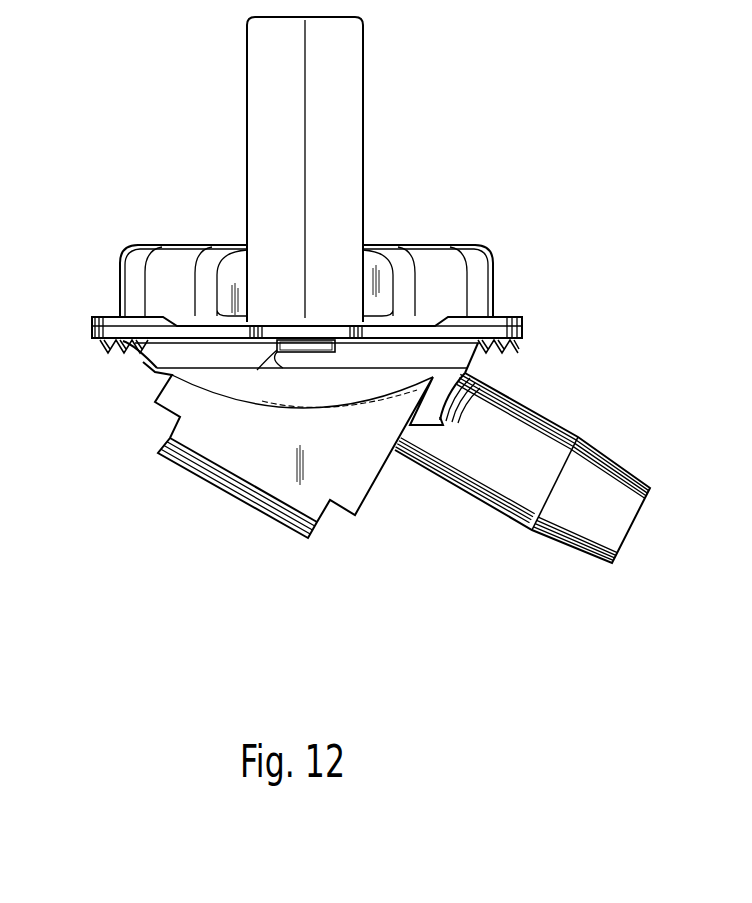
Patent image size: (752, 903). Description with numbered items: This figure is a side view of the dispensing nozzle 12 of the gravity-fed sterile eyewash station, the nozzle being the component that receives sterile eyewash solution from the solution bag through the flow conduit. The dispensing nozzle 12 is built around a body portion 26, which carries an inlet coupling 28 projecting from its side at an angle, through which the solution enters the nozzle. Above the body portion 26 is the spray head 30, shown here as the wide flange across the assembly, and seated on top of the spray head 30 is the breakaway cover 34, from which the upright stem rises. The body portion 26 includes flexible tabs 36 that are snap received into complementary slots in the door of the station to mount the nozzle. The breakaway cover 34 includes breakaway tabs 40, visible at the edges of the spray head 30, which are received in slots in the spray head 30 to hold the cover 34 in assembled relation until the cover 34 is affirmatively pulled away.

The dispensing nozzle 12 is at (302, 560).
The body portion 26 is at (250, 390).
The inlet coupling 28 is at (526, 447).
The spray head 30 is at (520, 324).
The breakaway cover 34 is at (483, 253).
The flexible tabs 36 is at (348, 480).
The breakaway tabs 40 is at (163, 383).